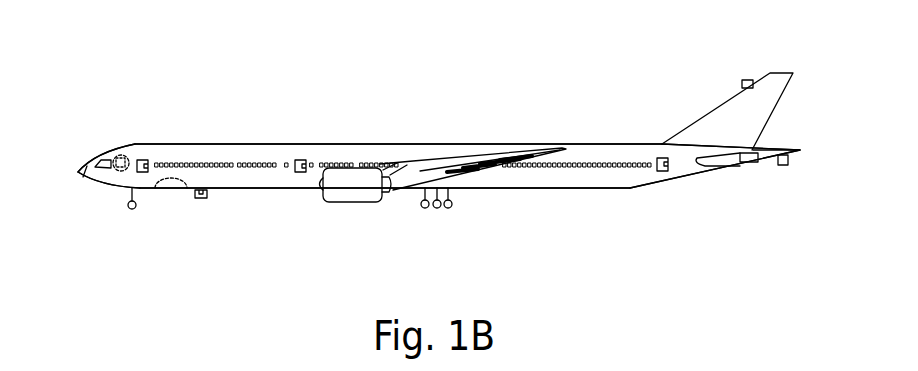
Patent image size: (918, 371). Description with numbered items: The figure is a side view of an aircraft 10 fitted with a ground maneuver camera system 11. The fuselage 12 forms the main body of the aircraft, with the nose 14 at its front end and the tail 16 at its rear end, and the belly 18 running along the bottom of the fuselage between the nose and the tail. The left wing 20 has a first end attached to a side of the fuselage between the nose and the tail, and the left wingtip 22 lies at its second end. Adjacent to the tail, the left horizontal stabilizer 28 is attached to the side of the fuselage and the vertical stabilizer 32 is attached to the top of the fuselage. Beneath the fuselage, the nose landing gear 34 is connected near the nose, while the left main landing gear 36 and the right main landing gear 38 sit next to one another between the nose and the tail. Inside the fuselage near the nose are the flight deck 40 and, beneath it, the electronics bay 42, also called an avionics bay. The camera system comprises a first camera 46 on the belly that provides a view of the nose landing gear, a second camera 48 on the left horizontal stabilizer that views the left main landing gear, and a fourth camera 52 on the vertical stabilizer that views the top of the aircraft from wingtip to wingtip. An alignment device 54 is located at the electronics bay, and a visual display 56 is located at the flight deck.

The aircraft 10 is at (265, 85).
The ground maneuver camera system 11 is at (641, 99).
The fuselage 12 is at (263, 157).
The nose 14 is at (85, 170).
The tail 16 is at (793, 160).
The belly 18 is at (277, 190).
The left wing 20 is at (433, 165).
The left wingtip 22 is at (527, 153).
The left horizontal stabilizer 28 is at (780, 165).
The vertical stabilizer 32 is at (750, 123).
The nose landing gear 34 is at (130, 188).
The left main landing gear 36 is at (421, 222).
The right main landing gear 38 is at (433, 214).
The flight deck 40 is at (113, 156).
The electronics bay 42 is at (161, 189).
The first camera 46 is at (202, 198).
The second camera 48 is at (752, 158).
The fourth camera 52 is at (752, 82).
The alignment device 54 is at (173, 189).
The visual display 56 is at (123, 155).